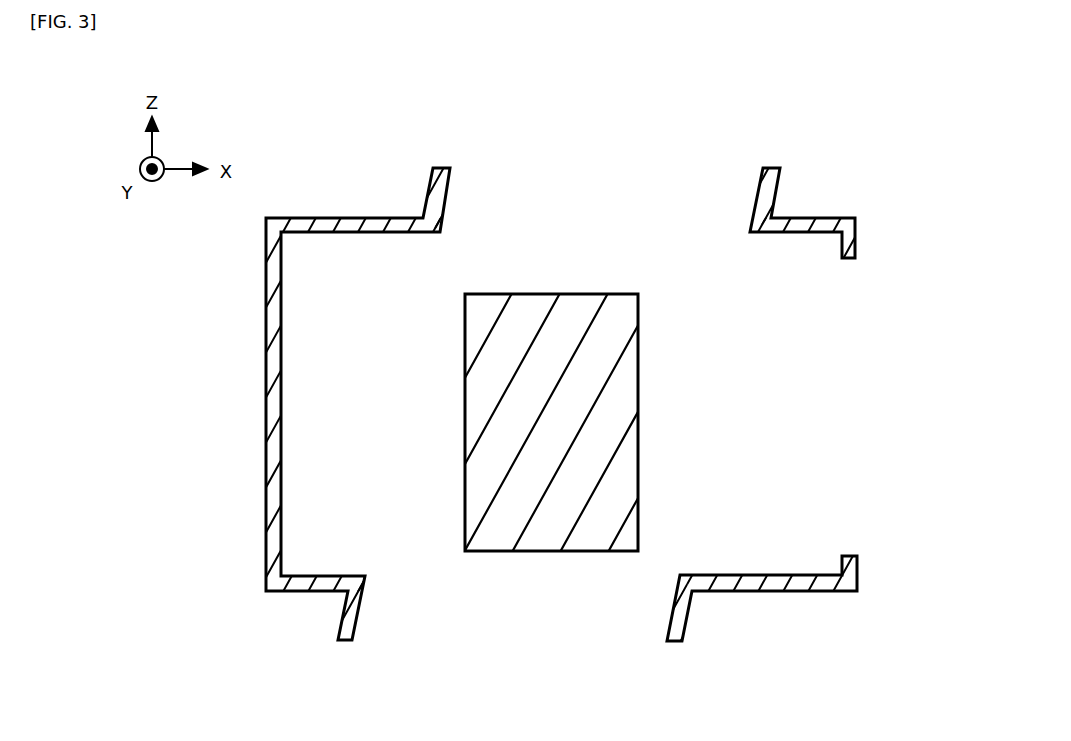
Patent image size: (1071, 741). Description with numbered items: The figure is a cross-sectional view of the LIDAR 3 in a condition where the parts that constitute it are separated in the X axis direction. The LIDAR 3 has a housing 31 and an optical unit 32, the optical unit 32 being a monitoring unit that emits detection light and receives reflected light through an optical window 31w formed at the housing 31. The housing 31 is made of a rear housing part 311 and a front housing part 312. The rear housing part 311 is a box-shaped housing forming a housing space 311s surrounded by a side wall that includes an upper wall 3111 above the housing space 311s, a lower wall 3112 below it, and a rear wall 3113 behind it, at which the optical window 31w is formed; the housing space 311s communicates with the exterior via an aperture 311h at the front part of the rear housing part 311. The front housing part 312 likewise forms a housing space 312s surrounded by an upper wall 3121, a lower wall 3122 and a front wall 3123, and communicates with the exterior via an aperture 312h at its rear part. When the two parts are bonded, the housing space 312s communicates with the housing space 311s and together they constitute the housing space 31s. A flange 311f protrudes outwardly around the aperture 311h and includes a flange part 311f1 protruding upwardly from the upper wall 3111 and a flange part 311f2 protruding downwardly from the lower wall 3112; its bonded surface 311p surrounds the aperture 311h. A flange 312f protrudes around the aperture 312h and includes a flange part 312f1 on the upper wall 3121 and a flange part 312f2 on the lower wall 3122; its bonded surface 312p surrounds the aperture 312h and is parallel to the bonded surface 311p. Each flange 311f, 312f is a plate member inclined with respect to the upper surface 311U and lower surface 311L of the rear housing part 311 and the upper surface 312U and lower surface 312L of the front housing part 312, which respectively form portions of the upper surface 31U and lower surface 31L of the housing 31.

The LIDAR 3 is at (566, 99).
The housing 31 is at (386, 138).
The rear housing part 311 is at (890, 336).
The front housing part 312 is at (213, 405).
The optical unit 32 is at (638, 380).
The upper wall 3111 is at (798, 232).
The lower wall 3112 is at (752, 578).
The rear wall 3113 is at (858, 250).
The upper wall 3121 is at (368, 232).
The lower wall 3122 is at (322, 576).
The front wall 3123 is at (267, 300).
The flange part 311f1 is at (535, 370).
The flange part 311f2 is at (683, 635).
The flange 311f is at (766, 168).
The flange part 312f1 is at (535, 370).
The flange part 312f2 is at (345, 628).
The flange 312f is at (443, 168).
The bonded surface 311p is at (755, 207).
The bonded surface 312p is at (447, 200).
The upper surface 311U is at (805, 218).
The lower surface 311L is at (775, 591).
The upper surface 312U is at (358, 193).
The lower surface 312L is at (262, 618).
The upper surface 31U is at (360, 218).
The lower surface 31L is at (308, 591).
The housing space 311s is at (727, 422).
The housing space 312s is at (357, 414).
The housing space 31s is at (310, 424).
The aperture 311h is at (738, 325).
The aperture 312h is at (378, 488).
The optical window 31w is at (850, 518).